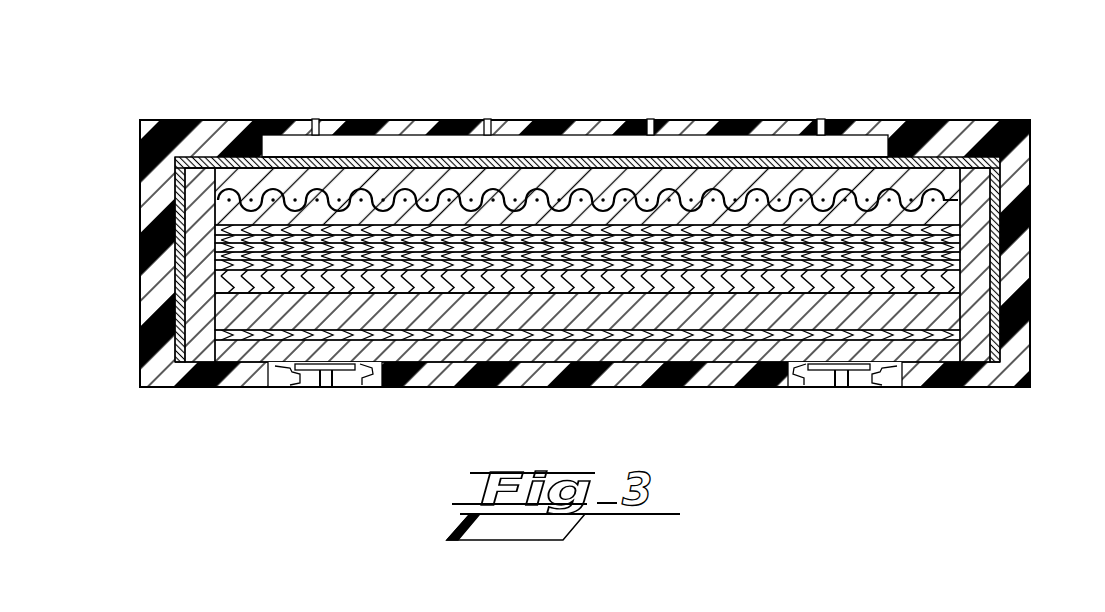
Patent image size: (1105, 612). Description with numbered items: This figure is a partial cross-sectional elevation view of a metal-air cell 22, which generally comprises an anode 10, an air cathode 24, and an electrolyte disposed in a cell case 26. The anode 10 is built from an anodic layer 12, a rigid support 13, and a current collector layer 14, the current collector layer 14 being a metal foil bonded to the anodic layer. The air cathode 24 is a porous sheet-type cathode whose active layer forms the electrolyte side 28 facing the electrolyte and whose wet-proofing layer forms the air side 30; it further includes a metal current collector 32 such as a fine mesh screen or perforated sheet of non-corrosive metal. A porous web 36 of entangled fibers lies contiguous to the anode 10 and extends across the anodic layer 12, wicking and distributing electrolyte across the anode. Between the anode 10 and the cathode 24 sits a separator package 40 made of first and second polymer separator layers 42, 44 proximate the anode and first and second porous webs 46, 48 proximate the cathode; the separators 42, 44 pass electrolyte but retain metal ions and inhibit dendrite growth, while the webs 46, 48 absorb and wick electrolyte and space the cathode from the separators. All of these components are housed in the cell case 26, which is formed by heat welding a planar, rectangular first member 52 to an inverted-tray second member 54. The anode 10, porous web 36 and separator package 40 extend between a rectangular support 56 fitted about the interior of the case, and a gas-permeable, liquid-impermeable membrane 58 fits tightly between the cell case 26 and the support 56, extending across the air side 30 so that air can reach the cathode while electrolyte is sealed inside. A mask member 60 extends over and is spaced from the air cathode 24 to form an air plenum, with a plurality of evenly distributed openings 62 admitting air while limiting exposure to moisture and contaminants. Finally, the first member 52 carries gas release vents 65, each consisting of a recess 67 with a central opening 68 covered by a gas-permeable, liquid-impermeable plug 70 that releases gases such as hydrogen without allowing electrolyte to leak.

The anode 10 is at (1030, 335).
The anodic layer 12 is at (530, 305).
The rigid support 13 is at (588, 345).
The current collector layer 14 is at (717, 340).
The metal-air cell 22 is at (148, 90).
The air cathode 24 is at (928, 185).
The cell case 26 is at (138, 162).
The electrolyte side 28 is at (548, 226).
The air side 30 is at (622, 160).
The metal current collector 32 is at (215, 210).
The porous web 36 is at (1002, 312).
The separator package 40 is at (1000, 290).
The first polymer separator layer 42 is at (218, 314).
The second polymer separator layer 44 is at (215, 280).
The first porous web 46 is at (215, 240).
The second porous web 48 is at (215, 230).
The first member 52 is at (240, 388).
The second member 54 is at (215, 252).
The rectangular support 56 is at (990, 387).
The gas-permeable, liquid-impermeable membrane 58 is at (850, 157).
The mask member 60 is at (572, 138).
The openings 62 is at (315, 118).
The gas release vents 65 is at (360, 375).
The recesses 67 is at (280, 372).
The central opening 68 is at (330, 372).
The plug 70 is at (330, 375).